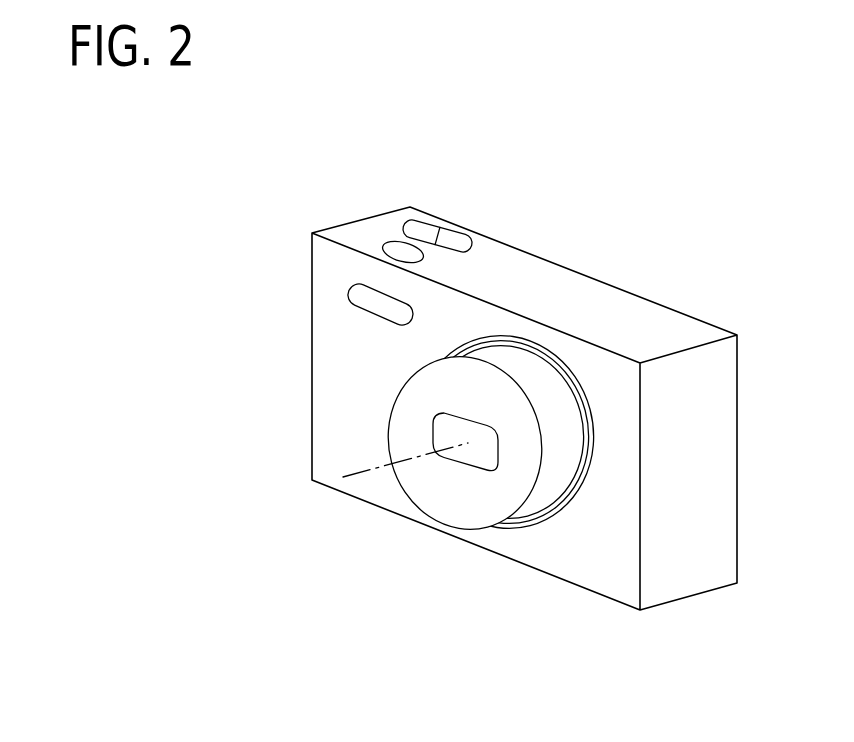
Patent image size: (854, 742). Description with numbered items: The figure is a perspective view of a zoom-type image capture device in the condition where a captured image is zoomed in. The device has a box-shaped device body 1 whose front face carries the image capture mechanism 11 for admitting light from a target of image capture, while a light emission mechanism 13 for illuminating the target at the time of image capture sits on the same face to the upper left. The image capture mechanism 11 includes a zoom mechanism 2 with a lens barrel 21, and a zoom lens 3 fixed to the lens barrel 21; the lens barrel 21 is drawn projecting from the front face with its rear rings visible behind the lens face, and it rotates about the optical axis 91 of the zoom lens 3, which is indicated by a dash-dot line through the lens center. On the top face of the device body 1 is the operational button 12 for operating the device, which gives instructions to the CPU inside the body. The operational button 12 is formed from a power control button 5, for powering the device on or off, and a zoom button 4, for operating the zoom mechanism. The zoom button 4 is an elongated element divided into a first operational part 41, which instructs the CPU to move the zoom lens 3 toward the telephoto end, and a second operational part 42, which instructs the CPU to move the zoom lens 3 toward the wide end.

The device body 1 is at (563, 278).
The zoom mechanism 2 is at (493, 510).
The zoom lens 3 is at (463, 453).
The zoom button 4 is at (448, 192).
The power control button 5 is at (395, 245).
The image capture mechanism 11 is at (465, 502).
The operational button 12 is at (431, 180).
The light emission mechanism 13 is at (360, 302).
The lens barrel 21 is at (545, 503).
The first operational part 41 is at (420, 227).
The second operational part 42 is at (457, 238).
The optical axis 91 is at (375, 467).